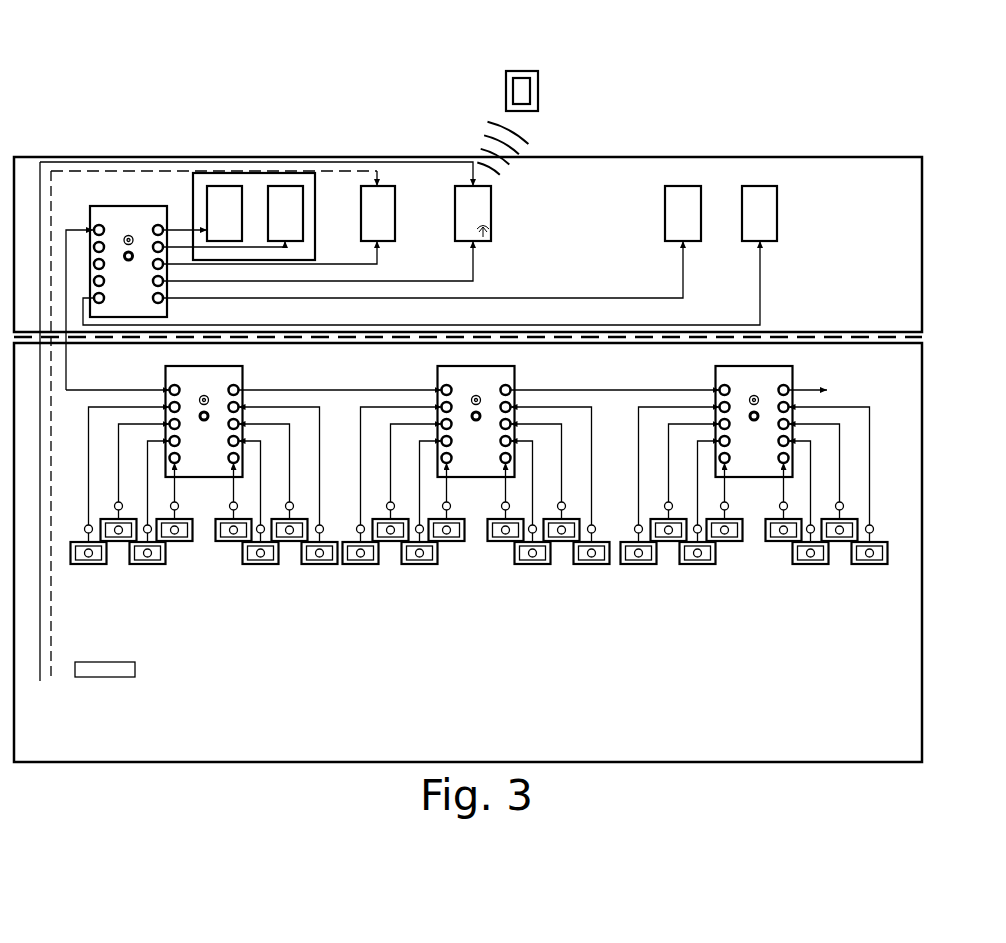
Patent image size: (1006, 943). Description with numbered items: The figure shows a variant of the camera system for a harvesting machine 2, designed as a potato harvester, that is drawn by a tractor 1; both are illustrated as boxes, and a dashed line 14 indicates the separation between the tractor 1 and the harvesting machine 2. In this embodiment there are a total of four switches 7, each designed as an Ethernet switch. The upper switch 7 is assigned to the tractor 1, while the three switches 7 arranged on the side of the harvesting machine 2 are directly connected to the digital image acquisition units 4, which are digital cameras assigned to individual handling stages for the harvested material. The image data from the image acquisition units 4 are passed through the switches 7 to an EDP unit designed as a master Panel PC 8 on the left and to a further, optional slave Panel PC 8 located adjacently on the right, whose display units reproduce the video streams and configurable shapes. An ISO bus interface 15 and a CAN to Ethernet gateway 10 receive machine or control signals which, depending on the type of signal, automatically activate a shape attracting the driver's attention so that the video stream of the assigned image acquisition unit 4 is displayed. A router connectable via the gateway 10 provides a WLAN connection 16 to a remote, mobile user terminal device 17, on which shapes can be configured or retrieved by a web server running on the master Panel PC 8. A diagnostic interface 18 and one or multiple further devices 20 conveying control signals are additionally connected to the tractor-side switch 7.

The tractor 1 is at (922, 243).
The harvesting machine 2 is at (922, 607).
The digital image acquisition units 4 is at (89, 564).
The switch 7 is at (120, 303).
The Panel PC 8 is at (239, 216).
The CAN to Ethernet gateway 10 is at (473, 213).
The dashed line 14 is at (877, 337).
The ISO bus interface 15 is at (378, 213).
The WLAN connection 16 is at (523, 145).
The mobile user terminal device 17 is at (538, 90).
The diagnostic interface 18 is at (759, 213).
The further devices 20 is at (683, 213).